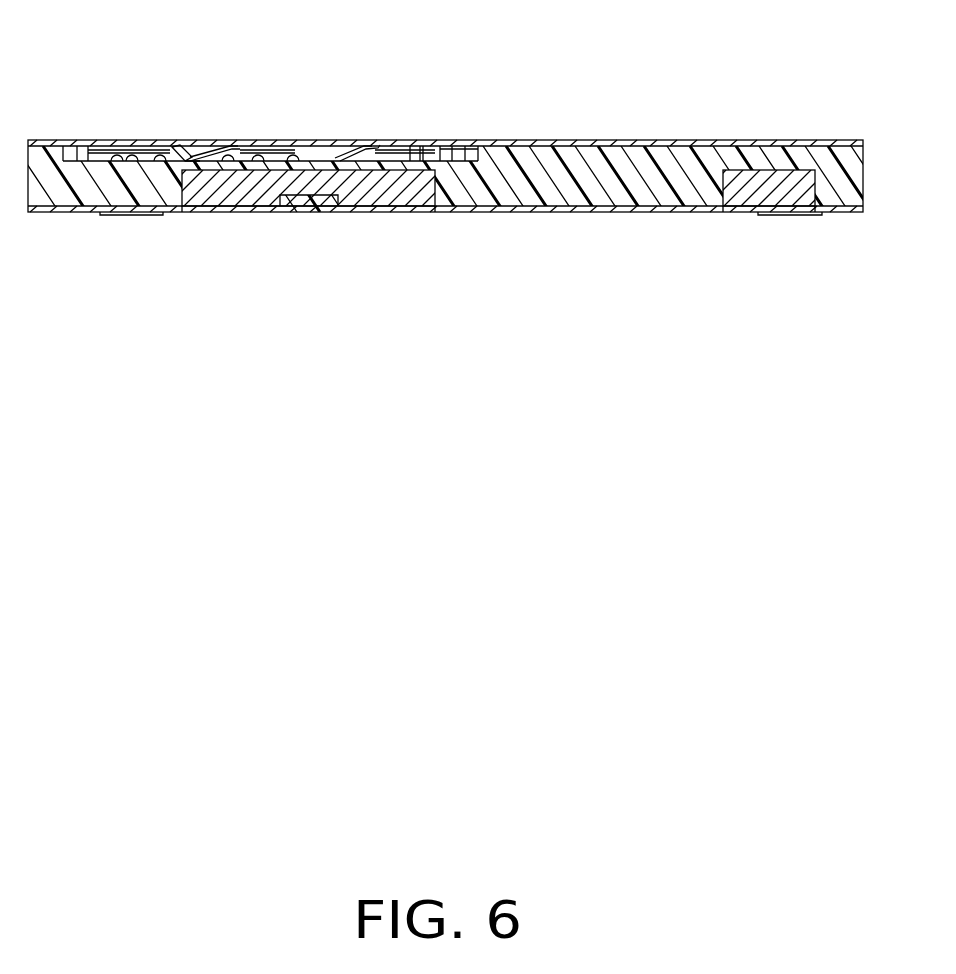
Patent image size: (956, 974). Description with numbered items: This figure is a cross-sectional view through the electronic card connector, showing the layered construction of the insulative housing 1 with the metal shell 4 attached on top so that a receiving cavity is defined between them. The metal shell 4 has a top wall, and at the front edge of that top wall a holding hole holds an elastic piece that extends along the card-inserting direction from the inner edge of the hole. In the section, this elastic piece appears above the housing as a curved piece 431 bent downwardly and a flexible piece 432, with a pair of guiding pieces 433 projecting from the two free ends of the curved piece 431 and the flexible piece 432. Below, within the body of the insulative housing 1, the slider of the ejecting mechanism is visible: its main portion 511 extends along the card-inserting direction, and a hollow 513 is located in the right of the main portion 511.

The insulative housing 1 is at (587, 168).
The metal shell 4 is at (692, 147).
The curved piece 431 is at (343, 148).
The flexible piece 432 is at (208, 148).
The guiding pieces 433 is at (192, 148).
The main portion 511 is at (477, 148).
The hollow 513 is at (430, 148).